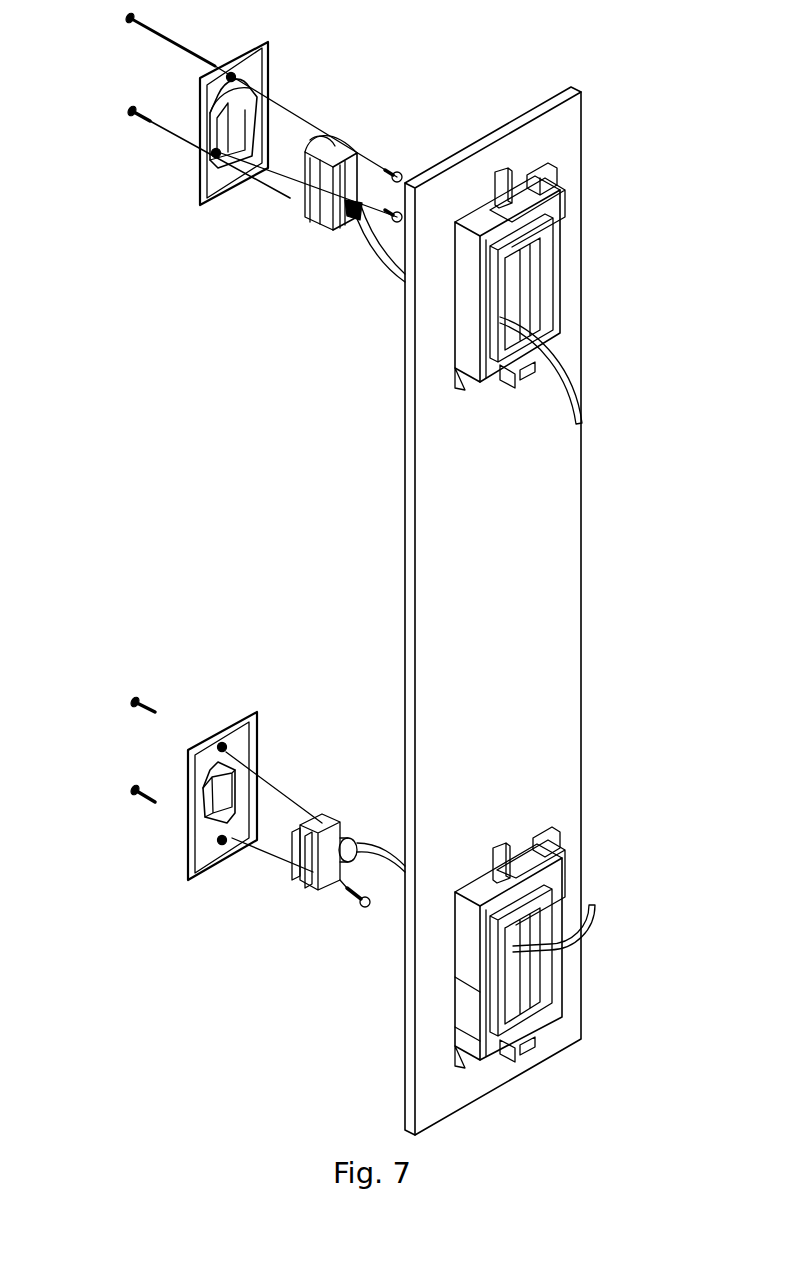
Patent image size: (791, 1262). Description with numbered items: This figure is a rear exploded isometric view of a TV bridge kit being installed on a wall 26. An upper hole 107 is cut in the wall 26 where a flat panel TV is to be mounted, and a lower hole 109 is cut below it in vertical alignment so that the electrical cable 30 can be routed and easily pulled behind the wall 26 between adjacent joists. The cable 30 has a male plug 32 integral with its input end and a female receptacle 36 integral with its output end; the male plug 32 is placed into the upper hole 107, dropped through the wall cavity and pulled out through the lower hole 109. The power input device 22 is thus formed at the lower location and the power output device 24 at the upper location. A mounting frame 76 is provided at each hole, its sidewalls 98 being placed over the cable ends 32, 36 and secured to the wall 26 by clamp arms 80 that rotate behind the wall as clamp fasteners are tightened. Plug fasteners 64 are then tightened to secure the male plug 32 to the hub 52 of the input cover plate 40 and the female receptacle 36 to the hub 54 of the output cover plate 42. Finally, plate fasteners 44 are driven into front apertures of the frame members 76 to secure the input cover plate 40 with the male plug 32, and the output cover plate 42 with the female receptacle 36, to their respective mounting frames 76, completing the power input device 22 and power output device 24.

The power input device 22 is at (193, 940).
The power output device 24 is at (193, 266).
The wall 26 is at (485, 604).
The electrical cable 30 is at (587, 393).
The male plug 32 is at (340, 833).
The female receptacle 36 is at (323, 228).
The input cover plate 40 is at (223, 857).
The output cover plate 42 is at (223, 197).
The plate fasteners 44 is at (140, 120).
The hub 52 is at (227, 775).
The hub 54 is at (268, 97).
The plug fasteners 64 is at (392, 168).
The mounting frame 76 is at (567, 267).
The clamp arms 80 is at (509, 180).
The sidewalls 98 is at (470, 1005).
The upper hole 107 is at (543, 170).
The lower hole 109 is at (540, 847).